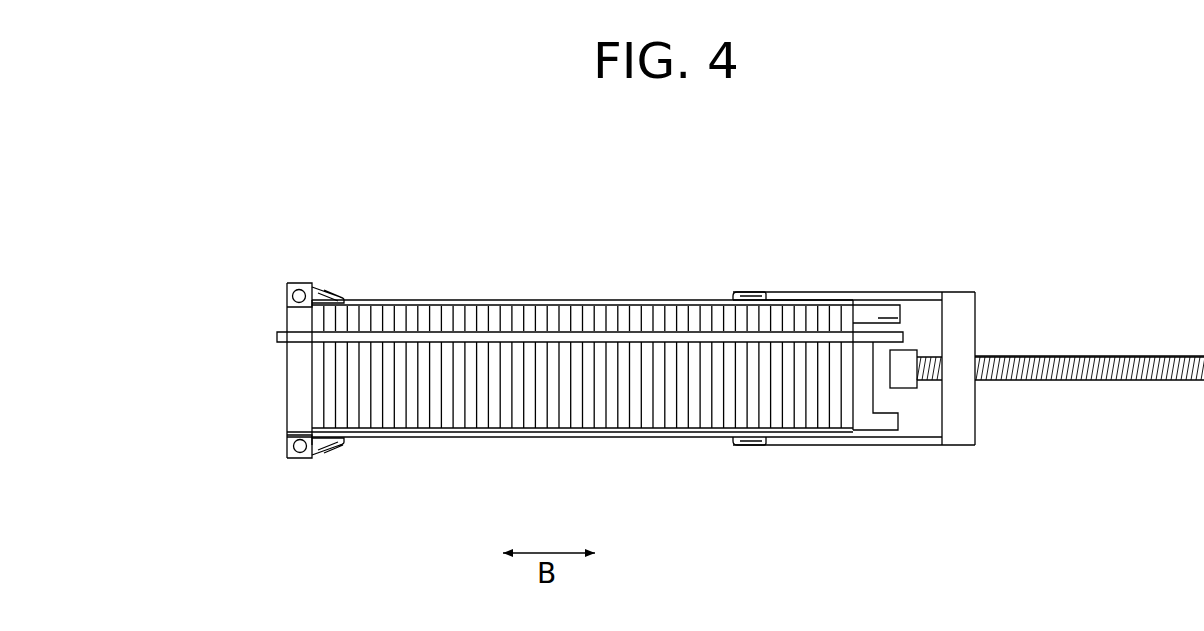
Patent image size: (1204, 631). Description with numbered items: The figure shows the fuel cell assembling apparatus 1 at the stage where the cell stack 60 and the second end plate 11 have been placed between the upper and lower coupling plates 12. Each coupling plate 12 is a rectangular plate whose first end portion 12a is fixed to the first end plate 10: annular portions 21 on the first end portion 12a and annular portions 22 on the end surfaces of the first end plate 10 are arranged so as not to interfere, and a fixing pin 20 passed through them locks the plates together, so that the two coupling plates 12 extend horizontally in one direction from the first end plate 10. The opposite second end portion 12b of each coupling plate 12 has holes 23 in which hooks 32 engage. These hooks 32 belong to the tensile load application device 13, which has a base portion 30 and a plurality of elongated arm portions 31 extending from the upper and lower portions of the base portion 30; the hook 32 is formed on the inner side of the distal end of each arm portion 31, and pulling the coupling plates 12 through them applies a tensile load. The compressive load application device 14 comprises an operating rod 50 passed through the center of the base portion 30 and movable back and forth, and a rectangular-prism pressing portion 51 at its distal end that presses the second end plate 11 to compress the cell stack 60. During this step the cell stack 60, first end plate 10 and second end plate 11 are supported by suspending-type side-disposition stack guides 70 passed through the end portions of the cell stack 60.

The fuel cell assembling apparatus 1 is at (942, 220).
The first end plate 10 is at (300, 372).
The second end plate 11 is at (888, 447).
The coupling plate 12 is at (508, 302).
The first end portion 12a is at (287, 300).
The second end portion 12b is at (752, 297).
The tensile load application device 13 is at (976, 278).
The compressive load application device 14 is at (1078, 348).
The fixing pin 20 is at (286, 301).
The annular portion 21 is at (314, 290).
The annular portion 22 is at (301, 283).
The hole 23 is at (733, 297).
The base portion 30 is at (977, 327).
The arm portion 31 is at (866, 292).
The hook 32 is at (766, 300).
The operating rod 50 is at (1158, 355).
The pressing portion 51 is at (908, 390).
The cell stack 60 is at (630, 420).
The suspending-type side-disposition stack guide 70 is at (633, 318).